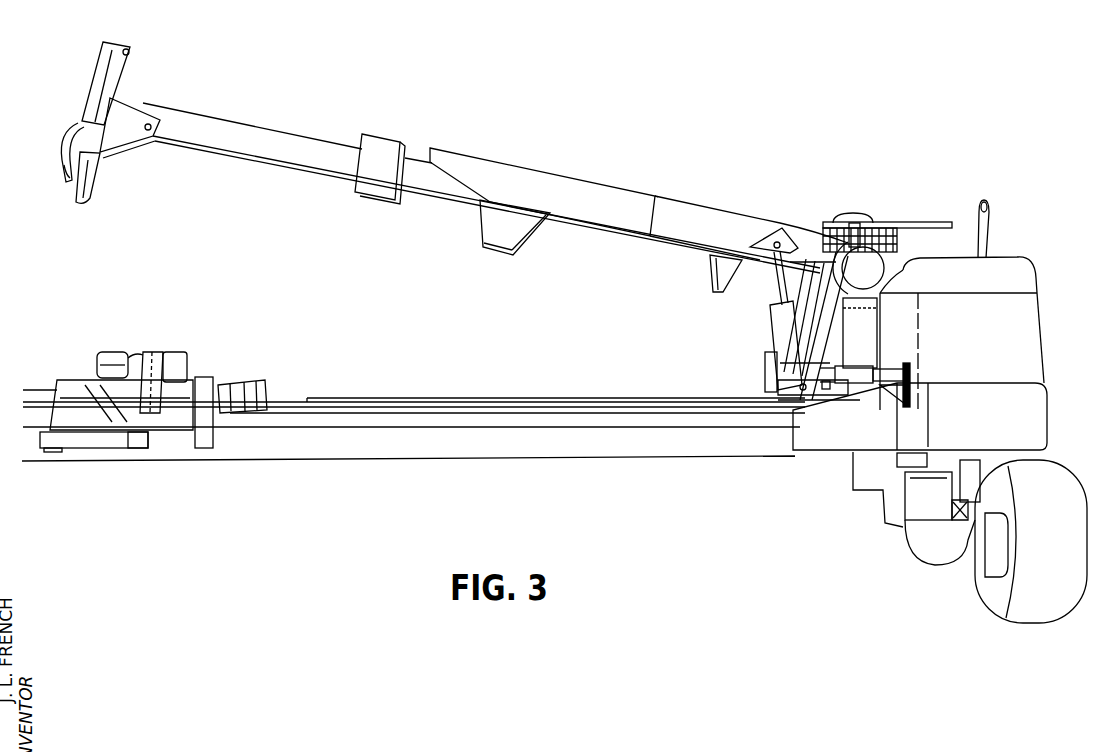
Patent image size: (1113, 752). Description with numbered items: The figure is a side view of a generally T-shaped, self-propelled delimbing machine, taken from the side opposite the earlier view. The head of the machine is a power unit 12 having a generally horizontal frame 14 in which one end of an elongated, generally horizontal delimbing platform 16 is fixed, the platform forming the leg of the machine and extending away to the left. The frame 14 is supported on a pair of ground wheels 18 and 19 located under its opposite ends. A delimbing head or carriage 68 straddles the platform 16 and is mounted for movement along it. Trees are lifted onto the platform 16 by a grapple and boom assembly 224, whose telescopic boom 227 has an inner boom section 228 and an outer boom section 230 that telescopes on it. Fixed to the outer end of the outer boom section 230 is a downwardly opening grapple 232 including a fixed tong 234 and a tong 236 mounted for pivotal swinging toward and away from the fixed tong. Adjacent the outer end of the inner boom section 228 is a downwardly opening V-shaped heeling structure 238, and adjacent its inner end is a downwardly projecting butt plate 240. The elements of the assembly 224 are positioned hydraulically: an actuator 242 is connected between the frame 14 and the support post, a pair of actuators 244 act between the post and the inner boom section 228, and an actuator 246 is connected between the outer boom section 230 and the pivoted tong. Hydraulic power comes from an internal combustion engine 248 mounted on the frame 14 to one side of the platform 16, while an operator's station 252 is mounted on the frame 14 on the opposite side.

The power unit 12 is at (959, 305).
The frame 14 is at (1040, 413).
The delimbing platform 16 is at (430, 460).
The ground wheel 18 is at (937, 557).
The ground wheel 19 is at (1022, 620).
The delimbing head or carriage 68 is at (188, 354).
The grapple and boom assembly 224 is at (445, 272).
The telescopic boom 227 is at (558, 167).
The inner boom section 228 is at (648, 198).
The outer boom section 230 is at (272, 152).
The grapple 232 is at (143, 160).
The fixed tong 234 is at (85, 202).
The tong 236 is at (64, 170).
The heeling structure 238 is at (522, 232).
The butt plate 240 is at (712, 282).
The actuator 242 is at (870, 367).
The actuators 244 is at (778, 324).
The actuator 246 is at (110, 82).
The internal combustion engine 248 is at (1030, 307).
The operator's station 252 is at (909, 216).